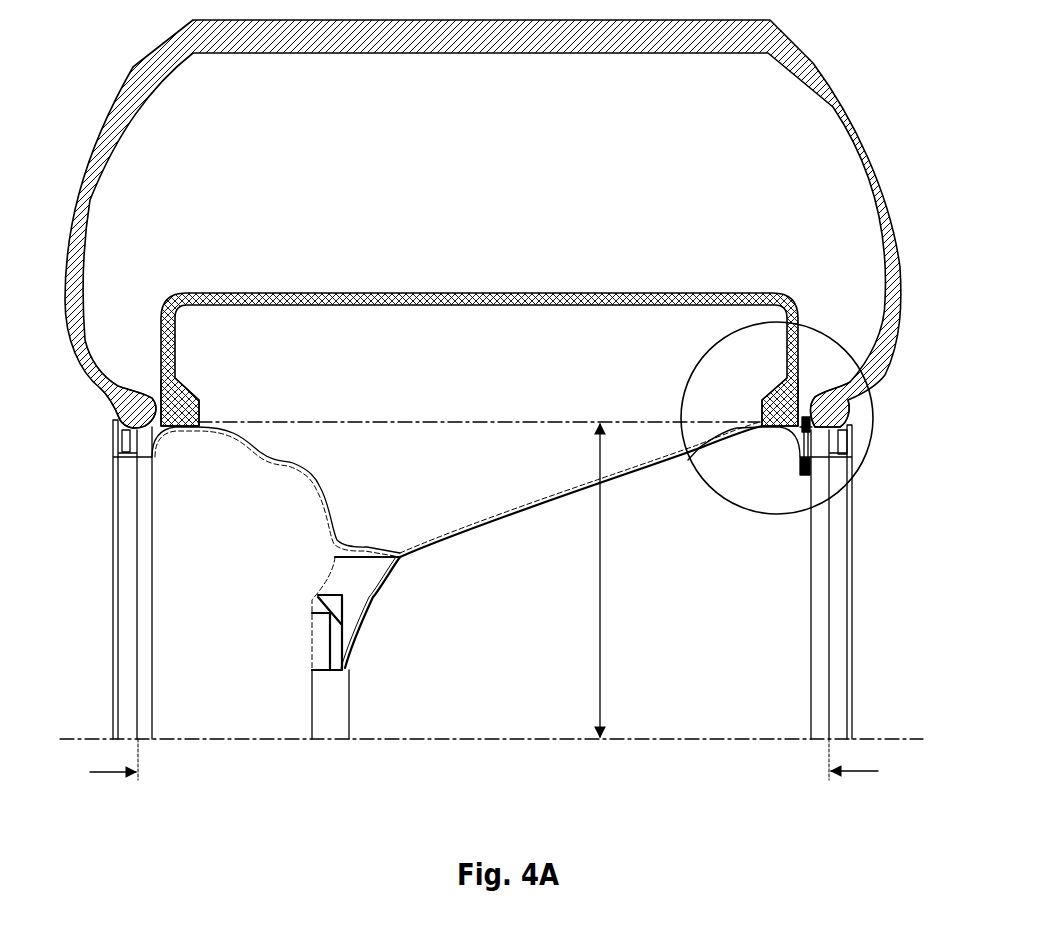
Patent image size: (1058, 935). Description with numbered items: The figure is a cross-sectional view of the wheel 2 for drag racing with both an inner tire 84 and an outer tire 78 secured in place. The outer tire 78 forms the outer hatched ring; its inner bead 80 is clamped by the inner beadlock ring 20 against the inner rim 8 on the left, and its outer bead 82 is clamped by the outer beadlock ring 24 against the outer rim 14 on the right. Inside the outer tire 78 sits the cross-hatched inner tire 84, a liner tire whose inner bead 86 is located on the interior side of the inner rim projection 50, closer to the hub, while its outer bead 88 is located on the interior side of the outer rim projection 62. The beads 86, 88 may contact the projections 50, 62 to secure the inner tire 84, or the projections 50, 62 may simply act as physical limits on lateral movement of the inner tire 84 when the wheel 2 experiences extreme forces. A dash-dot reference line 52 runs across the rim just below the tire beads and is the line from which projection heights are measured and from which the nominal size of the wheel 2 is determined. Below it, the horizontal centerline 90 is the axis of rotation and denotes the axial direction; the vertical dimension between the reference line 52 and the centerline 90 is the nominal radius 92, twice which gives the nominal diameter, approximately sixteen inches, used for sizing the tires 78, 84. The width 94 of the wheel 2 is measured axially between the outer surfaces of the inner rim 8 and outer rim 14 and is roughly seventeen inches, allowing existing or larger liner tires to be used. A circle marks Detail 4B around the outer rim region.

The wheel 2 is at (887, 608).
The inner rim 8 is at (488, 544).
The outer rim 14 is at (812, 470).
The inner beadlock ring 20 is at (127, 459).
The outer beadlock ring 24 is at (833, 459).
The inner rim projection 50 is at (161, 421).
The reference line 52 is at (421, 421).
The outer rim projection 62 is at (793, 423).
The outer tire 78 is at (410, 55).
The inner bead 80 is at (133, 390).
The outer bead 82 is at (830, 393).
The inner tire 84 is at (460, 295).
The inner bead 86 is at (195, 400).
The outer bead 88 is at (760, 404).
The centerline 90 is at (510, 737).
The nominal radius 92 is at (598, 645).
The width 94 is at (107, 773).
The Detail 4B is at (713, 499).